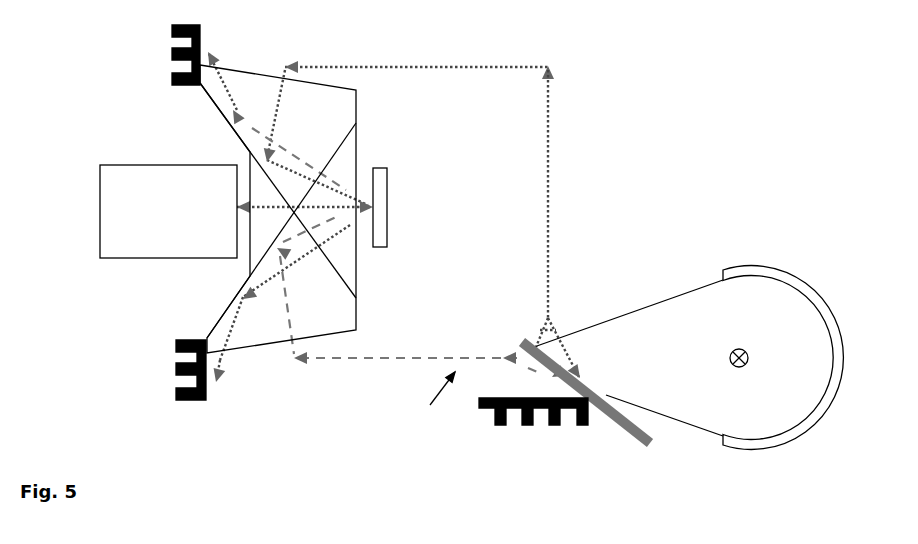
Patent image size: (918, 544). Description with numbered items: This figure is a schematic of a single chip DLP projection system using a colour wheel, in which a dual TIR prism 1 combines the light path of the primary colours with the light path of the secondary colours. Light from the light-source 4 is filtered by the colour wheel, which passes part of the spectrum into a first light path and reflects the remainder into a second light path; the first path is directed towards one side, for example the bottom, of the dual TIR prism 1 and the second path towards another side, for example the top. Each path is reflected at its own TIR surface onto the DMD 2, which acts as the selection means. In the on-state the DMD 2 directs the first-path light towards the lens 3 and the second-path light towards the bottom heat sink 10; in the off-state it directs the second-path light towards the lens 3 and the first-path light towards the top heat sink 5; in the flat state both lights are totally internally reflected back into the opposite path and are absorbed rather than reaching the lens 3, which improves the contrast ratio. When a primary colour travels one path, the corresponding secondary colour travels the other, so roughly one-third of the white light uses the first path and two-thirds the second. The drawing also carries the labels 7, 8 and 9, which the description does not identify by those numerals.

The dual TIR prism 1 is at (362, 275).
The DMD 2 is at (390, 223).
The lens 3 is at (183, 267).
The light-source 4 is at (795, 277).
The top heat sink 5 is at (603, 393).
The light beam 7 is at (557, 112).
The heat sink / light source 8 is at (165, 45).
The heat sink / light source 9 is at (172, 362).
The bottom heat sink 10 is at (567, 425).